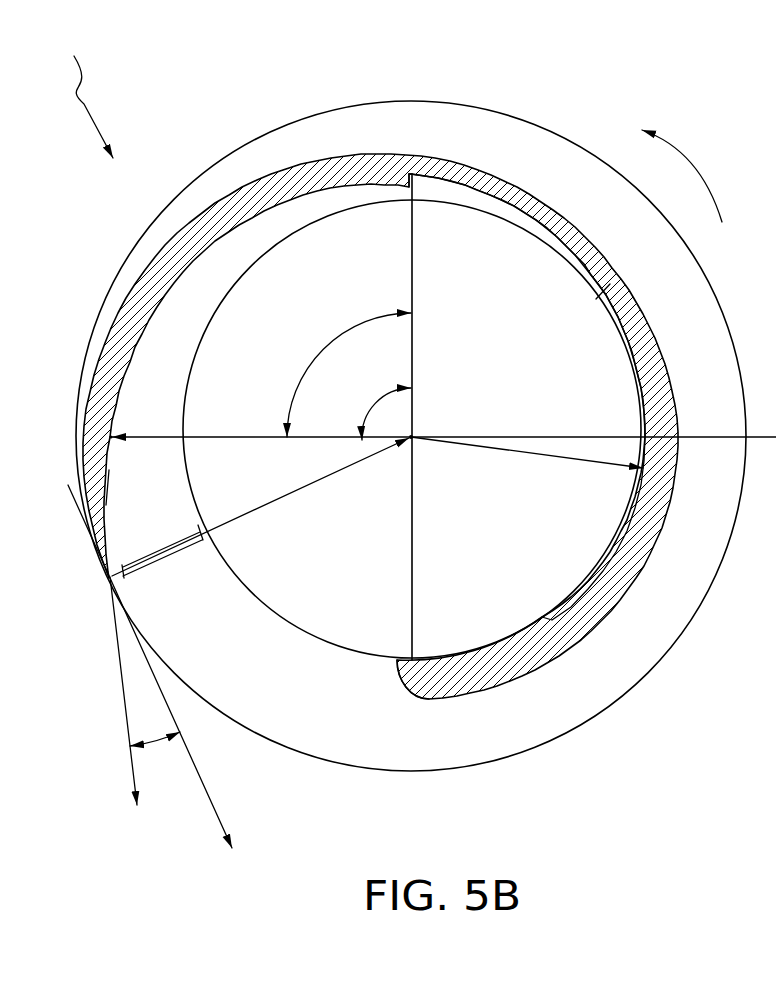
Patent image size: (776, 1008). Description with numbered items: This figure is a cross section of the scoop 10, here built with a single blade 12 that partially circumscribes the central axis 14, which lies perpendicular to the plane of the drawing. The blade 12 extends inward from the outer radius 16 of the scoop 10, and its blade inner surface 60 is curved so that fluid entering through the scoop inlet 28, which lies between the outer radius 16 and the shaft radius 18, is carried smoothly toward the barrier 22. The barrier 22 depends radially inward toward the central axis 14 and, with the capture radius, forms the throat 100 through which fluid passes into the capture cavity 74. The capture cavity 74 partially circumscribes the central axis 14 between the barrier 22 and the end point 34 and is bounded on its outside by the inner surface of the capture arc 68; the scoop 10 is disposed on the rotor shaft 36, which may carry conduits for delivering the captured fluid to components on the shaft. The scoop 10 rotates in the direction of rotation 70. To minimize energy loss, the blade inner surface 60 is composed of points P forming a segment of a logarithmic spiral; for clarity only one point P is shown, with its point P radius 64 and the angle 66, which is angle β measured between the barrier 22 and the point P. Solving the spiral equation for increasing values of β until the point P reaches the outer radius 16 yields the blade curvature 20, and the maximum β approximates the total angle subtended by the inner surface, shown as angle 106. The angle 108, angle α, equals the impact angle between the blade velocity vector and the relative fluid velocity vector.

The scoop 10 is at (72, 91).
The blade 12 is at (152, 265).
The central axis 14 is at (429, 417).
The outer radius 16 is at (87, 362).
The shaft radius 18 is at (411, 517).
The blade curvature 20 is at (176, 298).
The barrier 22 is at (408, 190).
The scoop inlet 28 is at (162, 560).
The end point 34 is at (437, 662).
The rotor shaft 36 is at (472, 323).
The blade inner surface 60 is at (108, 488).
The point P radius 64 is at (248, 440).
The angle β 66 is at (372, 407).
The capture arc 68 is at (533, 456).
The direction of rotation 70 is at (690, 182).
The capture cavity 74 is at (596, 299).
The throat 100 is at (413, 195).
The total angle subtended by inner surface 106 is at (341, 333).
The angle α 108 is at (155, 742).
The point P is at (112, 433).